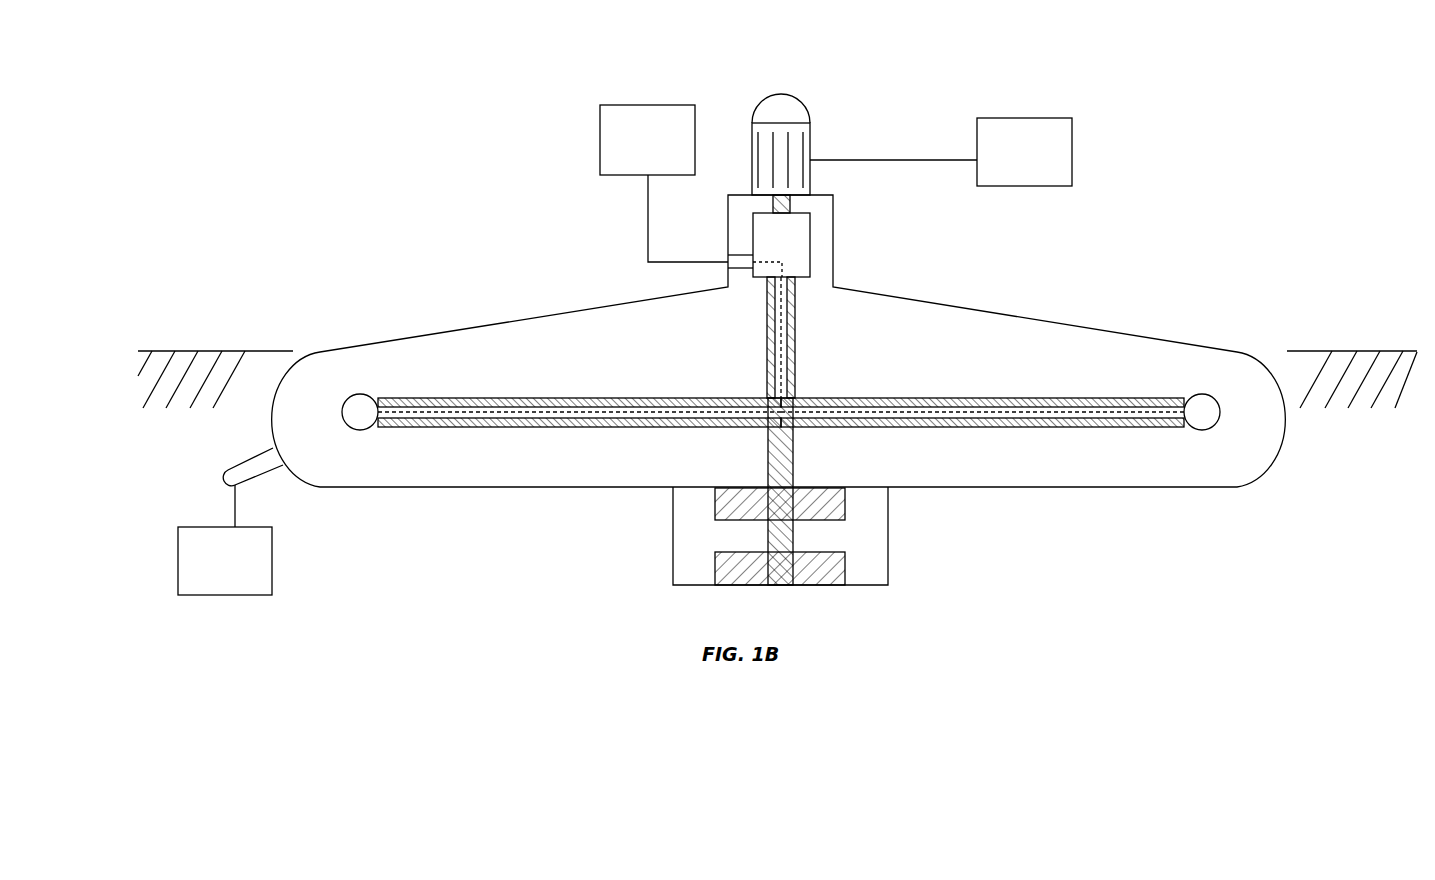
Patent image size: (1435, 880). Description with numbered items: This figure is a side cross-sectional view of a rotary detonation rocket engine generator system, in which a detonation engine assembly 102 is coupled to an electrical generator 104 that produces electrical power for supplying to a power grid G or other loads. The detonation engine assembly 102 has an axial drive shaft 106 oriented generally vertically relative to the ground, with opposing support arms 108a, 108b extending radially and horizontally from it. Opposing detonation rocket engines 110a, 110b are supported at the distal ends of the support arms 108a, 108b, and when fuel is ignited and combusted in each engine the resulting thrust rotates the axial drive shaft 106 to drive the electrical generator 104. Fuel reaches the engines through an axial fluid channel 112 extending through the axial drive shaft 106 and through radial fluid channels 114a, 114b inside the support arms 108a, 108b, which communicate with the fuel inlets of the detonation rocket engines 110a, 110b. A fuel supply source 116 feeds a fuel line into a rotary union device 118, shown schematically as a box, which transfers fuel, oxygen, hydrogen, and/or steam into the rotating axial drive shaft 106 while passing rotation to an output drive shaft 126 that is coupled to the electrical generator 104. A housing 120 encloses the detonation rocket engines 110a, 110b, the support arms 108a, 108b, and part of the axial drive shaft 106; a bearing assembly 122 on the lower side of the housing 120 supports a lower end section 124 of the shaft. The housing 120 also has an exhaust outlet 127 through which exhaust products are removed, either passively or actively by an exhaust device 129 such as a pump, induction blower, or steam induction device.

The detonation engine assembly 102 is at (950, 322).
The electrical generator 104 is at (832, 110).
The axial drive shaft 106 is at (795, 345).
The support arm 108a is at (1168, 427).
The support arm 108b is at (512, 427).
The detonation rocket engine 110a is at (1202, 427).
The detonation rocket engine 110b is at (367, 430).
The axial fluid channel 112 is at (768, 353).
The radial fluid channel 114a is at (1105, 423).
The radial fluid channel 114b is at (612, 410).
The fuel supply source 116 is at (615, 146).
The rotary union device 118 is at (802, 265).
The housing 120 is at (1210, 345).
The bearing assembly 122 is at (885, 553).
The lower end section 124 is at (768, 540).
The output drive shaft 126 is at (793, 200).
The exhaust outlet 127 is at (252, 467).
The exhaust device 129 is at (178, 566).
The power grid G is at (1072, 150).